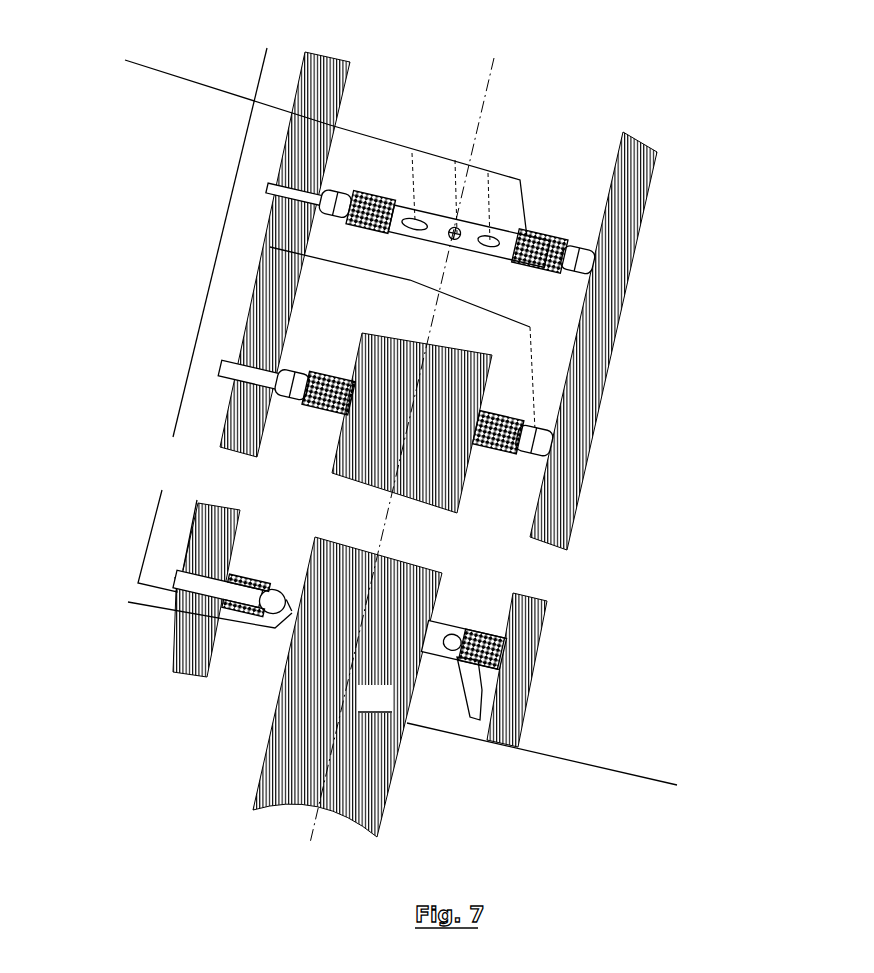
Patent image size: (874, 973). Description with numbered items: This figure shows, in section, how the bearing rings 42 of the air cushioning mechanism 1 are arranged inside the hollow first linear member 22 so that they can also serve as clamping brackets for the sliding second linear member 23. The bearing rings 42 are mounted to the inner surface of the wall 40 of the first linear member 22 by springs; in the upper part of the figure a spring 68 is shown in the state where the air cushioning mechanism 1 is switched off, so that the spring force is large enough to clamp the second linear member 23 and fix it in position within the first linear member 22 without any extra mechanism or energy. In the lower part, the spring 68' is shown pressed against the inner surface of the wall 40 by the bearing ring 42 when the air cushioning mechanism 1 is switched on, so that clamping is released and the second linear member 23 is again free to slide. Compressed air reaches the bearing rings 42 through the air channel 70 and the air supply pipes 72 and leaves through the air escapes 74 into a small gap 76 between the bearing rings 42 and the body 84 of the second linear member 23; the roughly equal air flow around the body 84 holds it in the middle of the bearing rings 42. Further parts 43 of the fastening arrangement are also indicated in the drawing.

The air cushioning mechanism 1 is at (203, 297).
The first linear member 22 is at (592, 438).
The second linear member 23 is at (331, 460).
The wall 40 is at (607, 373).
The bearing ring 42 is at (367, 198).
The washer / bolt head 43 is at (500, 267).
The spring 68 is at (303, 291).
The spring 68' is at (575, 669).
The air channel 70 is at (285, 73).
The air supply pipe 72 is at (267, 183).
The air escape 74 is at (228, 532).
The gap 76 is at (442, 630).
The body 84 is at (375, 699).